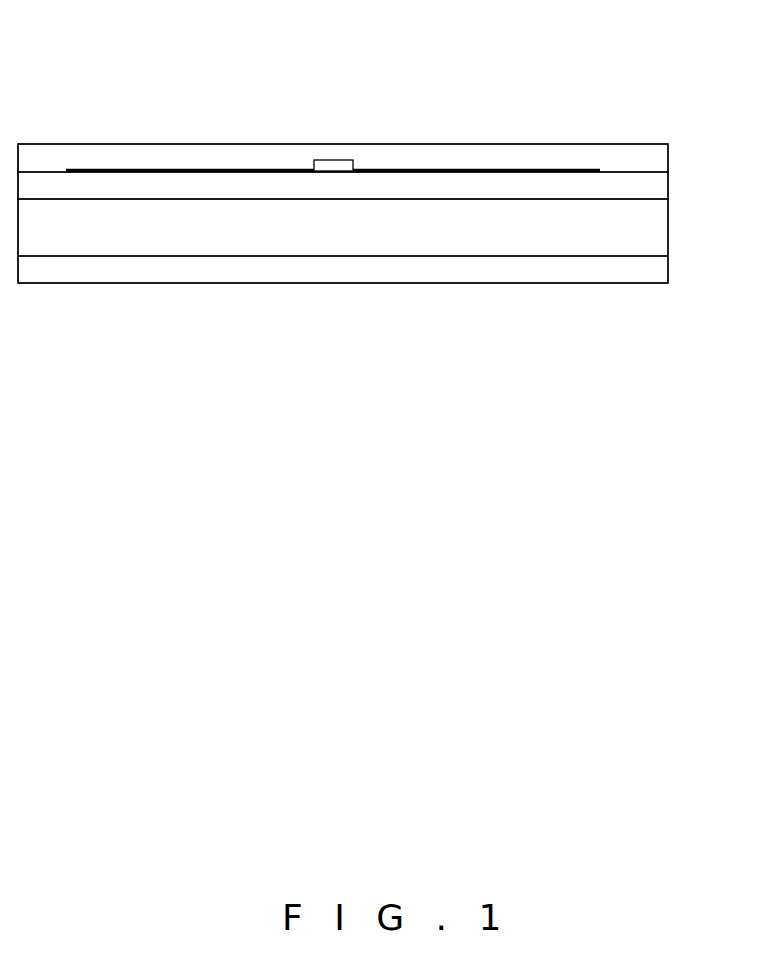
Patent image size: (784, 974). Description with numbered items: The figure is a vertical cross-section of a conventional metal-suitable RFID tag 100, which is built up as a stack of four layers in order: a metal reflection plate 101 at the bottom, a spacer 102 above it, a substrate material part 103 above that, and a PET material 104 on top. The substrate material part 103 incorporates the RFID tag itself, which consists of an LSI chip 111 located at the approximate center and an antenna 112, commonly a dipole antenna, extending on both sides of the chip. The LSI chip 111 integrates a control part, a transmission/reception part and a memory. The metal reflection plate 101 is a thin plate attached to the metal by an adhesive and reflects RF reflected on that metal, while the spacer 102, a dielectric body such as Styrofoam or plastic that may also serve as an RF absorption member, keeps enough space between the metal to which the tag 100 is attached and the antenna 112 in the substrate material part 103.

The metal-suitable RFID tag 100 is at (376, 97).
The metal reflection plate 101 is at (668, 267).
The spacer 102 is at (668, 227).
The substrate material part 103 is at (668, 187).
The PET material 104 is at (668, 156).
The LSI chip 111 is at (332, 172).
The antenna 112 is at (508, 172).